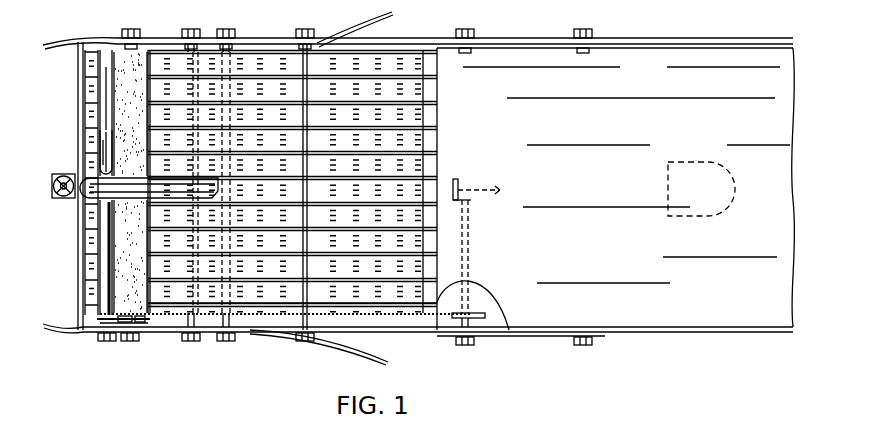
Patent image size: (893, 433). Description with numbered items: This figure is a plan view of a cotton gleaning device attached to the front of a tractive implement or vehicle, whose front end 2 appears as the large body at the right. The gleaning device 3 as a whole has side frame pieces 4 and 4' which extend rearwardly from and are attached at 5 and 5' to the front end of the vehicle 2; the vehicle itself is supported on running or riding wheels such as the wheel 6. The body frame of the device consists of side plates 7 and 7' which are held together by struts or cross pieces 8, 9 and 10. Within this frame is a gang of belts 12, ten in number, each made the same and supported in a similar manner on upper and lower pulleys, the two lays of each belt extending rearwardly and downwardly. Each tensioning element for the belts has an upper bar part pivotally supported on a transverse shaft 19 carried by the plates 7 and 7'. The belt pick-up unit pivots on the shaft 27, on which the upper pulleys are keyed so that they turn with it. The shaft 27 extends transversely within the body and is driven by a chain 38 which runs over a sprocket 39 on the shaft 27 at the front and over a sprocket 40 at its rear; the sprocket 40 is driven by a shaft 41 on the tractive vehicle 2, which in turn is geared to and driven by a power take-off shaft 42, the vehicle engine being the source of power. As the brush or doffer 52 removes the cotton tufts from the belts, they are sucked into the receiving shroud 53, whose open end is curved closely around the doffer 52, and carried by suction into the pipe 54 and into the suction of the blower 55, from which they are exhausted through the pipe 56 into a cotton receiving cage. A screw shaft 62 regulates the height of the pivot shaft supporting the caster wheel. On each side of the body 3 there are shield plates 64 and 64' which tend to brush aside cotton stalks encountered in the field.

The front end of tractive vehicle 2 is at (665, 340).
The gleaning device 3 is at (252, 345).
The side frame piece 4 is at (418, 346).
The side frame piece 4' is at (418, 36).
The attachment point 5 is at (472, 336).
The attachment point 5' is at (475, 35).
The riding wheel 6 is at (705, 163).
The side plate 7 is at (196, 340).
The side plate 7' is at (357, 35).
The strut 8 is at (80, 297).
The strut 9 is at (312, 325).
The strut 10 is at (220, 322).
The gang of belts 12 is at (272, 307).
The transverse shaft 19 is at (183, 325).
The shaft 27 is at (126, 343).
The chain 38 is at (390, 320).
The sprocket 39 is at (148, 322).
The sprocket 40 is at (455, 315).
The shaft 41 is at (470, 300).
The power take-off shaft 42 is at (472, 187).
The brush 52 is at (120, 236).
The receiving shroud 53 is at (102, 267).
The pipe 54 is at (99, 152).
The blower 55 is at (96, 156).
The pipe 56 is at (145, 197).
The screw shaft 62 is at (54, 181).
The shield plate 64 is at (319, 354).
The shield plate 64' is at (355, 29).